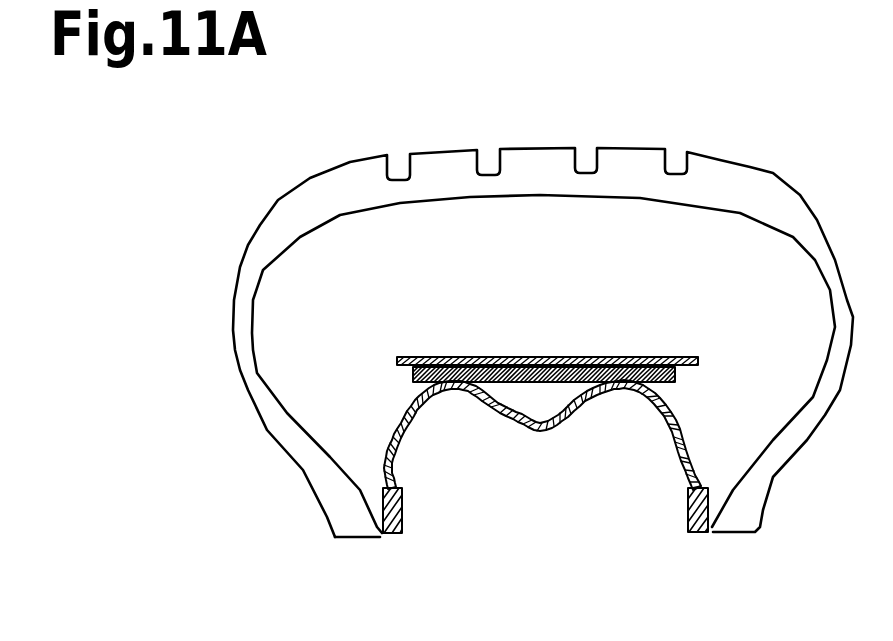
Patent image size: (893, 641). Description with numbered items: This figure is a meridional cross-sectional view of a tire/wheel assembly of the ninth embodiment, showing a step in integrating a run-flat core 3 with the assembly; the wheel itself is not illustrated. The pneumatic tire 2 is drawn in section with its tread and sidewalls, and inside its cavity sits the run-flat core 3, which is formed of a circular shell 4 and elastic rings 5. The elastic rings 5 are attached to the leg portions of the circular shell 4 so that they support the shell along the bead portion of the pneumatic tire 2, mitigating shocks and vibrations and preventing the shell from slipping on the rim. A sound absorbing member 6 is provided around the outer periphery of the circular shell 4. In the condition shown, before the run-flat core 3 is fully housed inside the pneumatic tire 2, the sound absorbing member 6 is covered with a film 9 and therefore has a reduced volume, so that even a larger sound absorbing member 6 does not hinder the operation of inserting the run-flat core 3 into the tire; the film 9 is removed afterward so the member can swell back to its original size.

The pneumatic tire 2 is at (753, 180).
The run-flat core 3 is at (697, 408).
The circular shell 4 is at (660, 420).
The elastic rings 5 is at (402, 500).
The sound absorbing member 6 is at (507, 357).
The film 9 is at (600, 357).